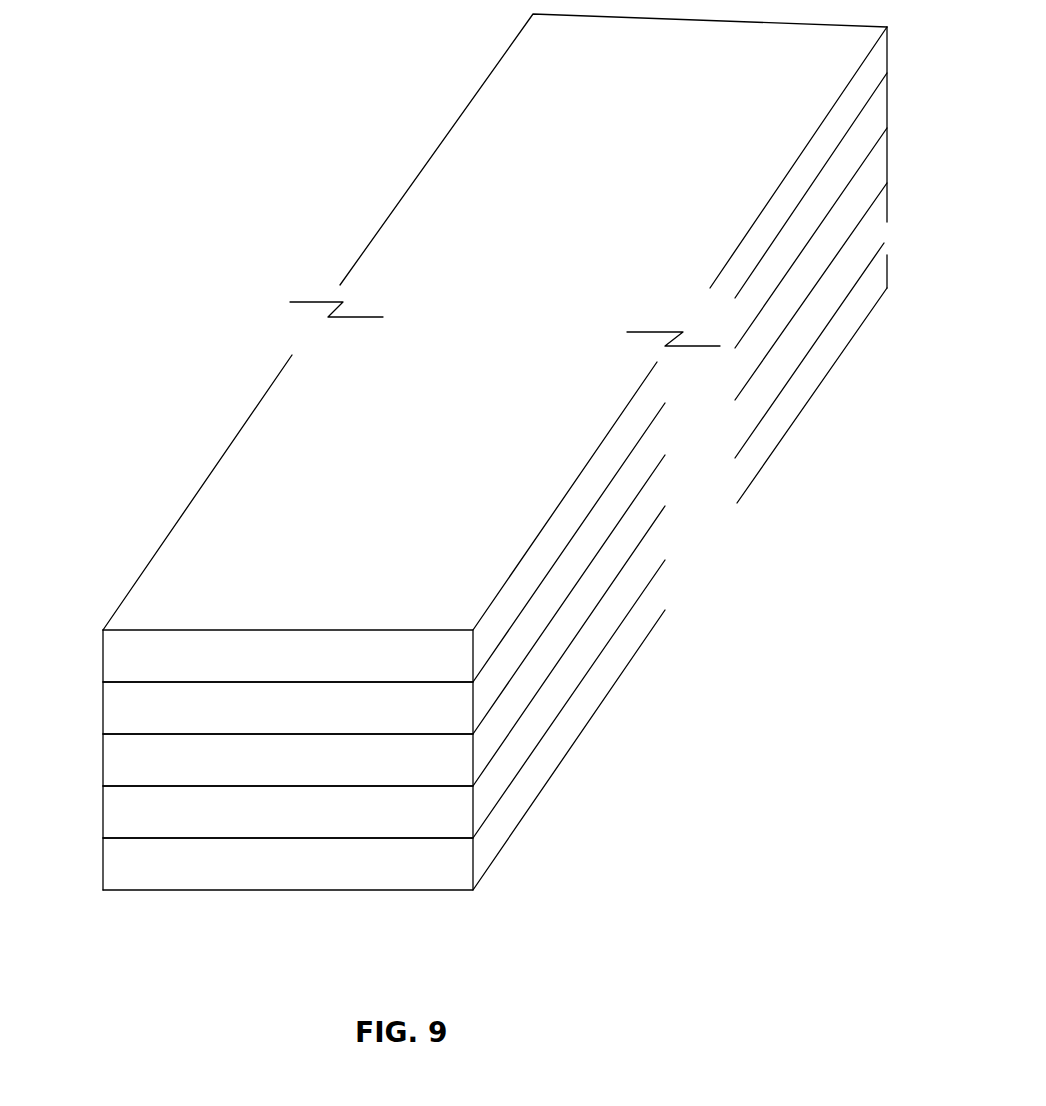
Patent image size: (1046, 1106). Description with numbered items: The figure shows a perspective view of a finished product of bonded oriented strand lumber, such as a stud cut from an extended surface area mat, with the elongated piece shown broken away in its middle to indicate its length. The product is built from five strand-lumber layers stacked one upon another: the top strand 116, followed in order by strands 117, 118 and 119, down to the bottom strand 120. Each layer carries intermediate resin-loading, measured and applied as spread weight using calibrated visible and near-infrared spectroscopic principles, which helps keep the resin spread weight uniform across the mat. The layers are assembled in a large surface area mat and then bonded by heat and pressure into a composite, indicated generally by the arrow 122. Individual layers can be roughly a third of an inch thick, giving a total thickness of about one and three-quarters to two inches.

The top strand 116 is at (101, 644).
The strand 117 is at (101, 710).
The strand 118 is at (101, 765).
The strand 119 is at (101, 822).
The bottom strand 120 is at (101, 866).
The laminated structure 122 is at (457, 475).